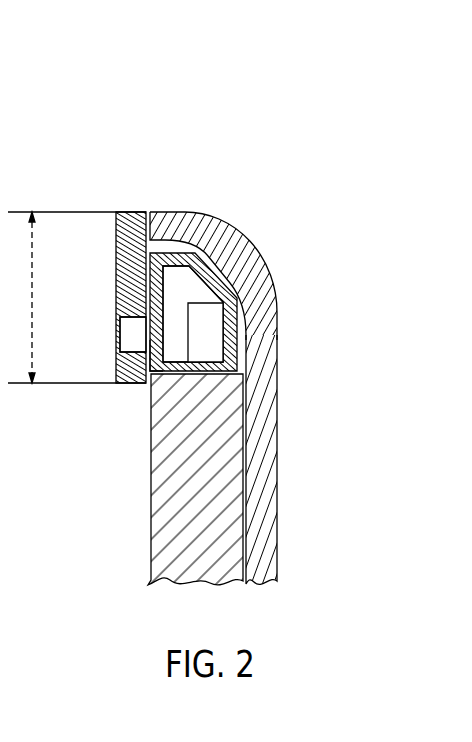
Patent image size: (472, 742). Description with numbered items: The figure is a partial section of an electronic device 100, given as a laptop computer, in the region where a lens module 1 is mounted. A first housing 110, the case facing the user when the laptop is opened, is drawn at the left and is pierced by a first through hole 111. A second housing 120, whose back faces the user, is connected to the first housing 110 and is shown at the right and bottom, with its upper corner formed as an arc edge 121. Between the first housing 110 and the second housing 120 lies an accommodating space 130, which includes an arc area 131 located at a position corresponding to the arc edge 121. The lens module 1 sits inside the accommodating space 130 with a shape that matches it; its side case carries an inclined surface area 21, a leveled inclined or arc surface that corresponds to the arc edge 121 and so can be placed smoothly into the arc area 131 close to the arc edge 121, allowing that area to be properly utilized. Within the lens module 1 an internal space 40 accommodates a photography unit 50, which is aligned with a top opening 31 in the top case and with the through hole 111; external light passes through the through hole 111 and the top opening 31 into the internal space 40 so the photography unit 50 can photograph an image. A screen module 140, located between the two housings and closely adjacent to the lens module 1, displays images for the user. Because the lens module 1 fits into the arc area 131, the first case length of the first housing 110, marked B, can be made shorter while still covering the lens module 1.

The electronic device 100 is at (135, 178).
The first housing 110 is at (116, 246).
The first through hole 111 is at (117, 337).
The lens module 1 is at (147, 291).
The inclined surface area 21 is at (212, 282).
The internal space 40 is at (173, 287).
The photography unit 50 is at (214, 316).
The top opening 31 is at (153, 353).
The second housing 120 is at (274, 476).
The arc edge 121 is at (245, 242).
The arc area 131 is at (215, 257).
The accommodating space 130 is at (248, 347).
The screen module 140 is at (153, 562).